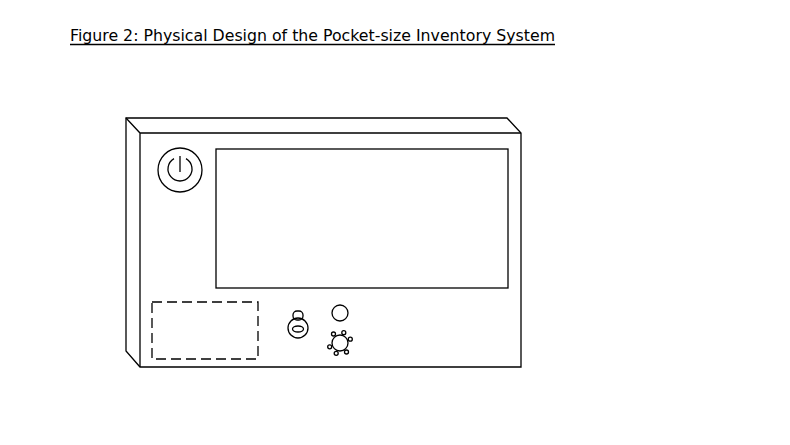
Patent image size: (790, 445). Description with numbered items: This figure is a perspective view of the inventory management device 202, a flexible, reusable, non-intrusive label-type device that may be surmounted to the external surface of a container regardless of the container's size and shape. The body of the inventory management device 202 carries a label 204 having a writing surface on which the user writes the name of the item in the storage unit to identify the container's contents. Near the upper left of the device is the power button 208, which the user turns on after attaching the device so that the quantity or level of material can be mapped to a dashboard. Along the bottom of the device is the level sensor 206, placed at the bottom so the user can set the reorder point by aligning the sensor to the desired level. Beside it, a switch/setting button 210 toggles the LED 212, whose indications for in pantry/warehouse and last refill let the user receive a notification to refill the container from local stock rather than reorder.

The inventory management device 202 is at (483, 117).
The label 204 is at (468, 150).
The level sensor 206 is at (265, 294).
The power button 208 is at (192, 154).
The switch/setting button 210 is at (305, 296).
The LED 212 is at (349, 295).